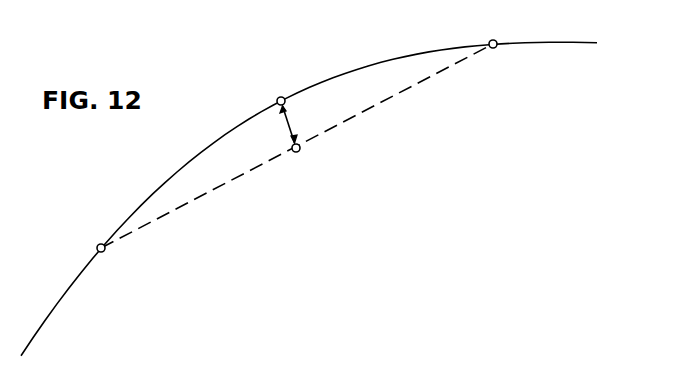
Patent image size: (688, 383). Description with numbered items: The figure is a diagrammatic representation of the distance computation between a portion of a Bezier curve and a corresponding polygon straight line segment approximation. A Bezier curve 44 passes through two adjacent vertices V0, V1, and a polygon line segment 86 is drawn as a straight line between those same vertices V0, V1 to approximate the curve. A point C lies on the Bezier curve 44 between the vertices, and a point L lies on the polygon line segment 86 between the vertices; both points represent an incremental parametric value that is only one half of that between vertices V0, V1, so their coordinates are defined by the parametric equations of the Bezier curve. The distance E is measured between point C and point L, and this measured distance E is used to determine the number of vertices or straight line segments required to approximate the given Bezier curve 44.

The Bezier curve 44 is at (155, 192).
The polygon line segment 86 is at (262, 165).
The vertex V0 is at (76, 246).
The vertex V1 is at (495, 29).
The point on Bezier curve C is at (282, 87).
The point on polygon line segment L is at (303, 163).
The distance E is at (291, 127).